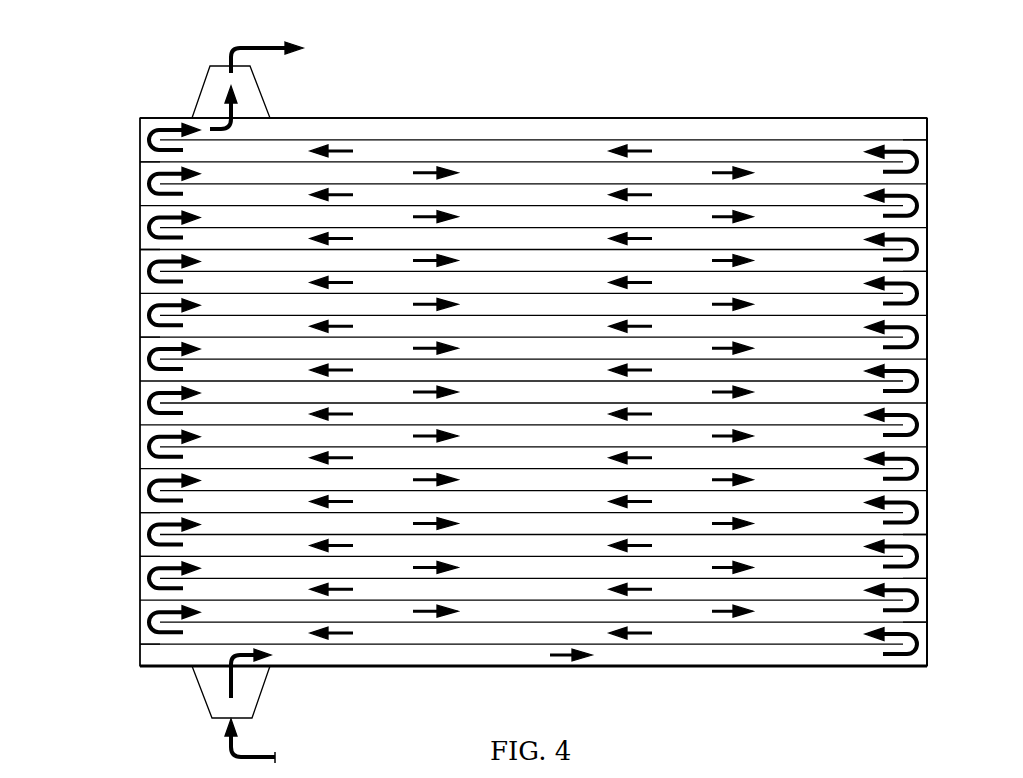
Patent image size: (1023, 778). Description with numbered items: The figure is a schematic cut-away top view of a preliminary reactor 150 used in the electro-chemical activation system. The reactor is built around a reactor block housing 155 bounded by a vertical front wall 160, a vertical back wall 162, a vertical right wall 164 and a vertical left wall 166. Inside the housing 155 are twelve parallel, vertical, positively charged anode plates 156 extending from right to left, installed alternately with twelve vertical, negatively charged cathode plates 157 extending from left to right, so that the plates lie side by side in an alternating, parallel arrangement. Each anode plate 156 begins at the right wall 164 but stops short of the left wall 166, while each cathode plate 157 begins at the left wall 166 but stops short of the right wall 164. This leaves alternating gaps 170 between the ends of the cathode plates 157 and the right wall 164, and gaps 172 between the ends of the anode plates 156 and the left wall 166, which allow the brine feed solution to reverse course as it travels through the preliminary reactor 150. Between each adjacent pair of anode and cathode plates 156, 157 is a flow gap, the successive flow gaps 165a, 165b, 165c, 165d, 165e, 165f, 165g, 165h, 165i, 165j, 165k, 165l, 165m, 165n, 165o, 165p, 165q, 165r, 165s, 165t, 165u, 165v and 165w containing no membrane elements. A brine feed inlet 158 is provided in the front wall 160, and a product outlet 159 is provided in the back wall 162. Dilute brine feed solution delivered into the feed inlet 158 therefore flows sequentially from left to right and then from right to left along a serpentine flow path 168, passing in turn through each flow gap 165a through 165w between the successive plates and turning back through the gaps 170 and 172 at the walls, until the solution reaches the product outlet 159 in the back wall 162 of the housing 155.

The preliminary reactor 150 is at (922, 80).
The reactor block housing 155 is at (717, 117).
The anode plates 156 is at (925, 138).
The cathode plates 157 is at (146, 160).
The brine feed inlet 158 is at (226, 745).
The product outlet 159 is at (284, 54).
The vertical front wall 160 is at (392, 668).
The vertical back wall 162 is at (387, 117).
The vertical right wall 164 is at (928, 664).
The vertical left wall 166 is at (140, 662).
The flow path 168 is at (561, 668).
The gaps between cathode plates and right wall 170 is at (919, 160).
The gaps between anode plates and left wall 172 is at (146, 137).
The flow gap 165a is at (722, 632).
The flow gap 165b is at (772, 611).
The flow gap 165c is at (823, 588).
The flow gap 165d is at (893, 572).
The flow gap 165e is at (895, 546).
The flow gap 165f is at (895, 524).
The flow gap 165g is at (170, 503).
The flow gap 165h is at (170, 481).
The flow gap 165i is at (170, 459).
The flow gap 165j is at (895, 437).
The flow gap 165k is at (895, 415).
The flow gap 165l is at (895, 393).
The flow gap 165m is at (170, 371).
The flow gap 165n is at (170, 349).
The flow gap 165o is at (895, 327).
The flow gap 165p is at (895, 306).
The flow gap 165q is at (170, 284).
The flow gap 165r is at (170, 262).
The flow gap 165s is at (895, 240).
The flow gap 165t is at (895, 218).
The flow gap 165u is at (170, 196).
The flow gap 165v is at (170, 174).
The flow gap 165w is at (798, 150).